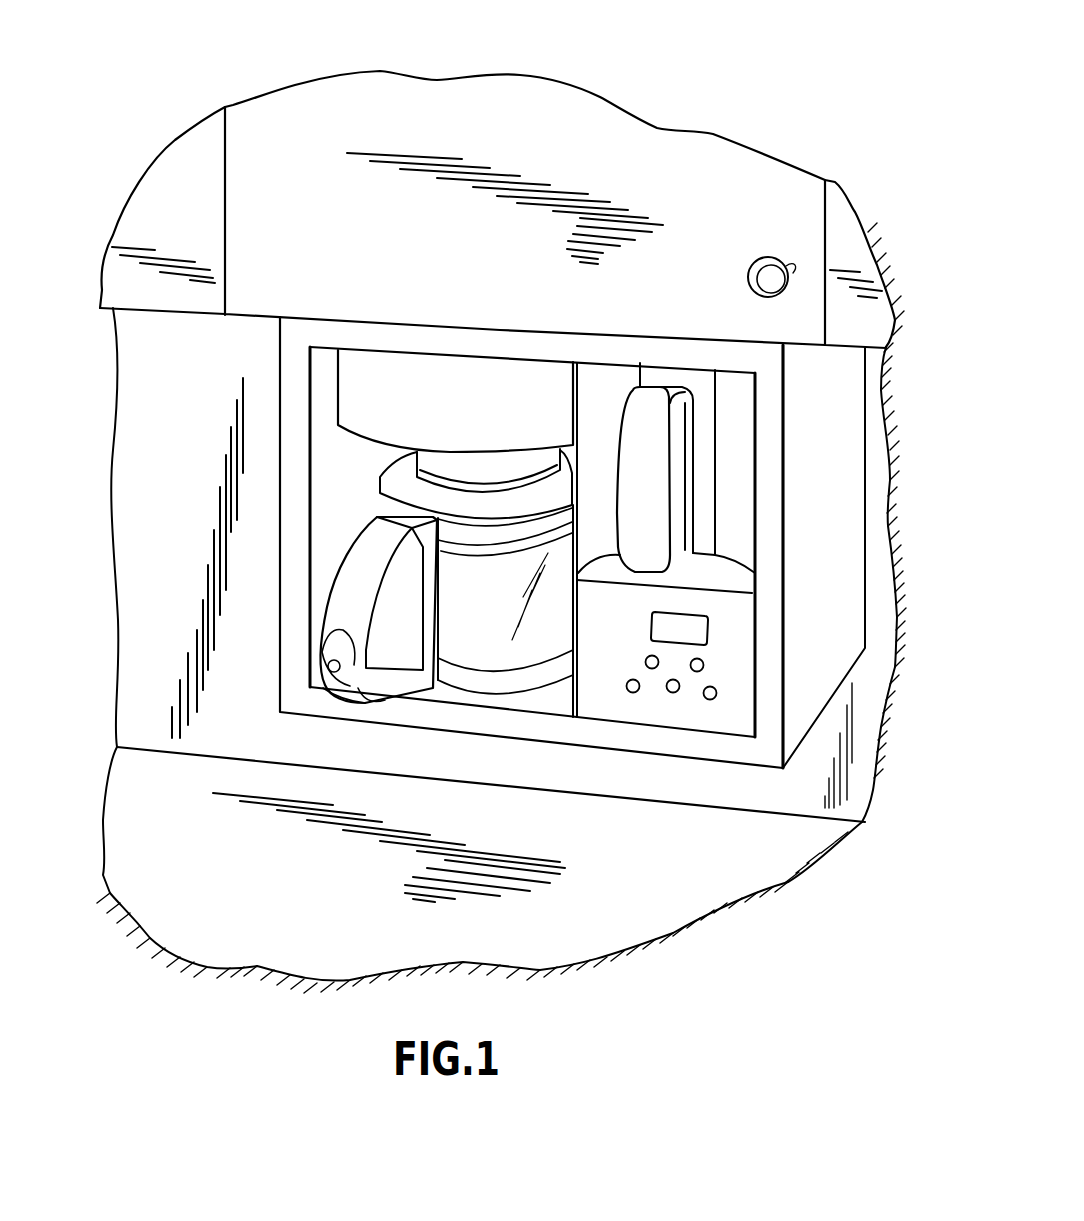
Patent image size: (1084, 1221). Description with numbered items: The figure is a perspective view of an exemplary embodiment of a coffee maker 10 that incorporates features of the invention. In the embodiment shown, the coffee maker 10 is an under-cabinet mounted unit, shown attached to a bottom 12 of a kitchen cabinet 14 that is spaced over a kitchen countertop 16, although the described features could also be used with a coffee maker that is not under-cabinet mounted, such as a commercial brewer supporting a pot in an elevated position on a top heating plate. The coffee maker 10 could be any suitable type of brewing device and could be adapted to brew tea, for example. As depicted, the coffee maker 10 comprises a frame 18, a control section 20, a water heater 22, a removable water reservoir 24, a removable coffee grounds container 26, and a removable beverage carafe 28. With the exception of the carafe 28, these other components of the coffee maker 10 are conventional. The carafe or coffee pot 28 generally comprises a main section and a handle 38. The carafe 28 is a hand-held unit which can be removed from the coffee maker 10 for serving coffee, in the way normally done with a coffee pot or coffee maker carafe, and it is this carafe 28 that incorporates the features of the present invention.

The coffee maker 10 is at (583, 744).
The bottom 12 is at (237, 318).
The kitchen cabinet 14 is at (540, 90).
The kitchen countertop 16 is at (145, 787).
The frame 18 is at (763, 770).
The control section 20 is at (685, 713).
The water heater 22 is at (845, 499).
The removable water reservoir 24 is at (677, 438).
The removable coffee grounds container 26 is at (350, 375).
The removable beverage carafe 28 is at (345, 600).
The handle 38 is at (372, 548).